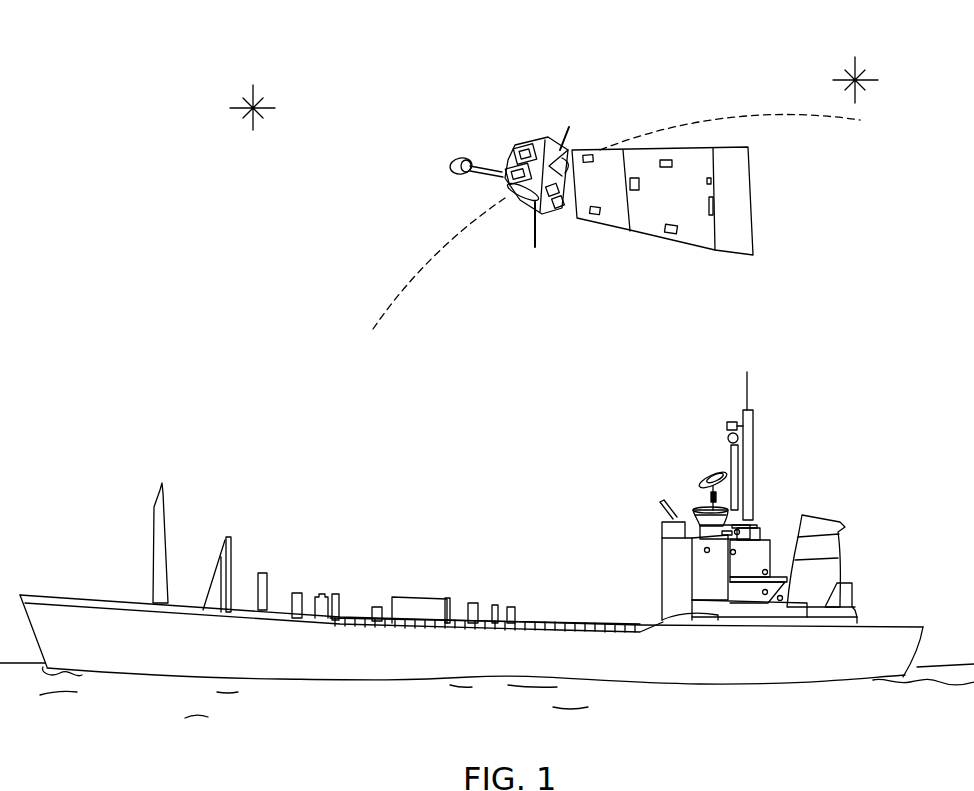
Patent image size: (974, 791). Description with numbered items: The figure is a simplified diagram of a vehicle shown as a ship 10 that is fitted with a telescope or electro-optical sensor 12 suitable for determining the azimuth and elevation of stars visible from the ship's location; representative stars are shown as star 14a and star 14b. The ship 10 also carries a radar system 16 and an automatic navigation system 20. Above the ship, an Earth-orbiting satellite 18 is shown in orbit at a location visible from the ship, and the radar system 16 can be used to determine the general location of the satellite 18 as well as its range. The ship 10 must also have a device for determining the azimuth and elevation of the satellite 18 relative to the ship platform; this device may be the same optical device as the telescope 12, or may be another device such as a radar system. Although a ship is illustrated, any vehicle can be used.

The ship 10 is at (487, 525).
The telescope or electro-optical sensor 12 is at (662, 500).
The star 14a is at (838, 71).
The star 14b is at (240, 100).
The radar system 16 is at (708, 473).
The Earth-orbiting satellite 18 is at (580, 248).
The automatic navigation system 20 is at (730, 424).